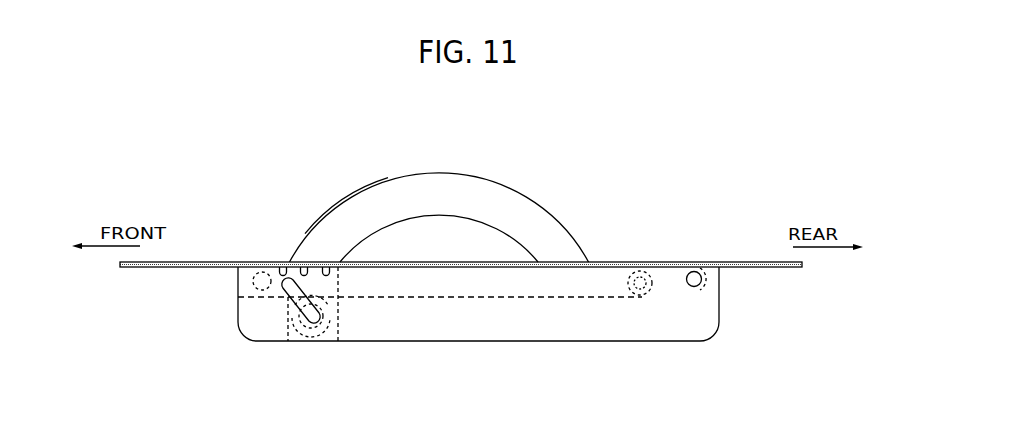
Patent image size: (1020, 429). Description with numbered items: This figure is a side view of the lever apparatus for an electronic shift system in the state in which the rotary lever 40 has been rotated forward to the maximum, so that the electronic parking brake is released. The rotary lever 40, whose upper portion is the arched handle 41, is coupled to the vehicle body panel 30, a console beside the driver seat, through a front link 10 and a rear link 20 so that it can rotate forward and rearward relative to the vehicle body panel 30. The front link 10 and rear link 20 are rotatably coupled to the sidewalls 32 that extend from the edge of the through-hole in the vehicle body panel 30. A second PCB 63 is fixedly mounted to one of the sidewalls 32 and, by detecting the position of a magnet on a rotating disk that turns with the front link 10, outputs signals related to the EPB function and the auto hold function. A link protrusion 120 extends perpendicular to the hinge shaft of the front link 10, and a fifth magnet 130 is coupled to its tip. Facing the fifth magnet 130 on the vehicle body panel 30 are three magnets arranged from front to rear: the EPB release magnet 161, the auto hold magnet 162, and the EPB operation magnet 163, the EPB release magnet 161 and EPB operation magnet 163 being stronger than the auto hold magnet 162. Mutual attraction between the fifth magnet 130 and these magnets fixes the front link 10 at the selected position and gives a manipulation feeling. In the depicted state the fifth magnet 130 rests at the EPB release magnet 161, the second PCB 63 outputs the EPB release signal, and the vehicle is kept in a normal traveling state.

The front link 10 is at (282, 303).
The rear link 20 is at (665, 287).
The vehicle body panel 30 is at (668, 262).
The sidewalls 32 is at (607, 330).
The rotary lever 40 is at (533, 183).
The handle 41 is at (468, 176).
The second PCB 63 is at (330, 330).
The link protrusion 120 is at (313, 323).
The fifth magnet 130 is at (283, 281).
The EPB release magnet 161 is at (283, 267).
The auto hold magnet 162 is at (304, 267).
The EPB operation magnet 163 is at (328, 267).